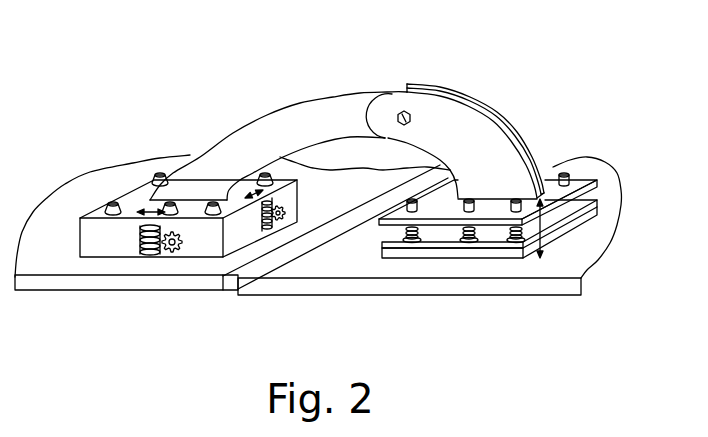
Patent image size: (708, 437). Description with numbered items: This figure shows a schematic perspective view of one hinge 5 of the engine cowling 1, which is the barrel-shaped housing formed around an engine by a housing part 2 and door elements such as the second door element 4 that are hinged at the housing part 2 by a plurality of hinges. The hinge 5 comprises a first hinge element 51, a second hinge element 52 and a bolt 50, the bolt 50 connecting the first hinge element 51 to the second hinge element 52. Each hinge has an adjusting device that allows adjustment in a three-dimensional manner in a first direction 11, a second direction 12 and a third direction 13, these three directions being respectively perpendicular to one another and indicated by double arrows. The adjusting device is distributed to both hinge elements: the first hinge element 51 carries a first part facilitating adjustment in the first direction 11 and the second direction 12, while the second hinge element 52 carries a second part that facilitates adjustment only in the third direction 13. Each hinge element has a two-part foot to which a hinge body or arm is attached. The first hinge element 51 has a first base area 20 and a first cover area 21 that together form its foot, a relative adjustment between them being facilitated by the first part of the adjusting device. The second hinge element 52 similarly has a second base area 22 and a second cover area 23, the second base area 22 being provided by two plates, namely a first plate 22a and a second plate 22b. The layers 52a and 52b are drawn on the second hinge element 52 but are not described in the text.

The engine cowling 1 is at (104, 115).
The housing part 2 is at (65, 284).
The second door element 4 is at (497, 286).
The hinge 5 is at (378, 103).
The first direction 11 is at (145, 222).
The second direction 12 is at (233, 227).
The third direction 13 is at (553, 223).
The first base area 20 is at (197, 250).
The first cover area 21 is at (238, 224).
The second base area 22 is at (467, 276).
The first plate 22a is at (389, 256).
The second plate 22b is at (437, 249).
The second cover area 23 is at (553, 168).
The bolt 50 is at (403, 112).
The first hinge element 51 is at (258, 132).
The second hinge element 52 is at (506, 103).
The inner layer of second segment 52a is at (455, 97).
The outer layer of second segment 52b is at (497, 126).